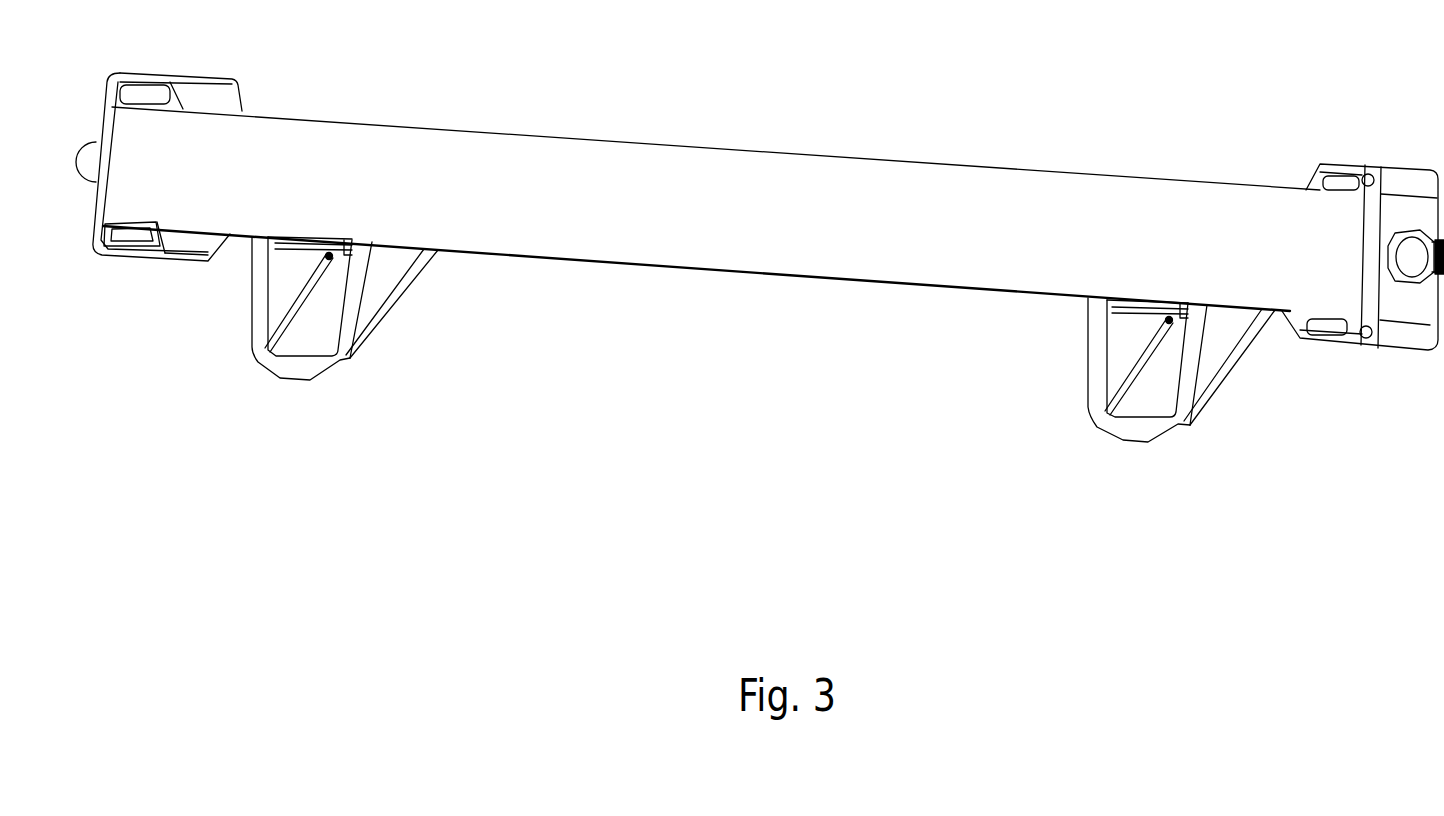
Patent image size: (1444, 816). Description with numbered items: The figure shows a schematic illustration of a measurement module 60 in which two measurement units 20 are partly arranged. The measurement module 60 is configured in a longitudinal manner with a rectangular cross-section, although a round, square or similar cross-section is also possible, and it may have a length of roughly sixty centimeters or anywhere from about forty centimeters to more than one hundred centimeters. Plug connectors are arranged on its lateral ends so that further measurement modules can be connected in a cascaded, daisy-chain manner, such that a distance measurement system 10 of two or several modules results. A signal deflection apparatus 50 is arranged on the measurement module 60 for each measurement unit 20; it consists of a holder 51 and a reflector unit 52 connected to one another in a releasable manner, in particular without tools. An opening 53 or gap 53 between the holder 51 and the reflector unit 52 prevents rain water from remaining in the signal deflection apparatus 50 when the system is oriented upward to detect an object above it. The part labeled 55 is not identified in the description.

The distance measurement system 10 is at (760, 279).
The measurement unit 20 is at (730, 350).
The signal deflection apparatus 50 is at (730, 342).
The holder 51 is at (291, 238).
The reflector unit 52 is at (400, 283).
The opening 53 is at (327, 257).
The base portion 55 is at (310, 333).
The measurement module 60 is at (767, 213).